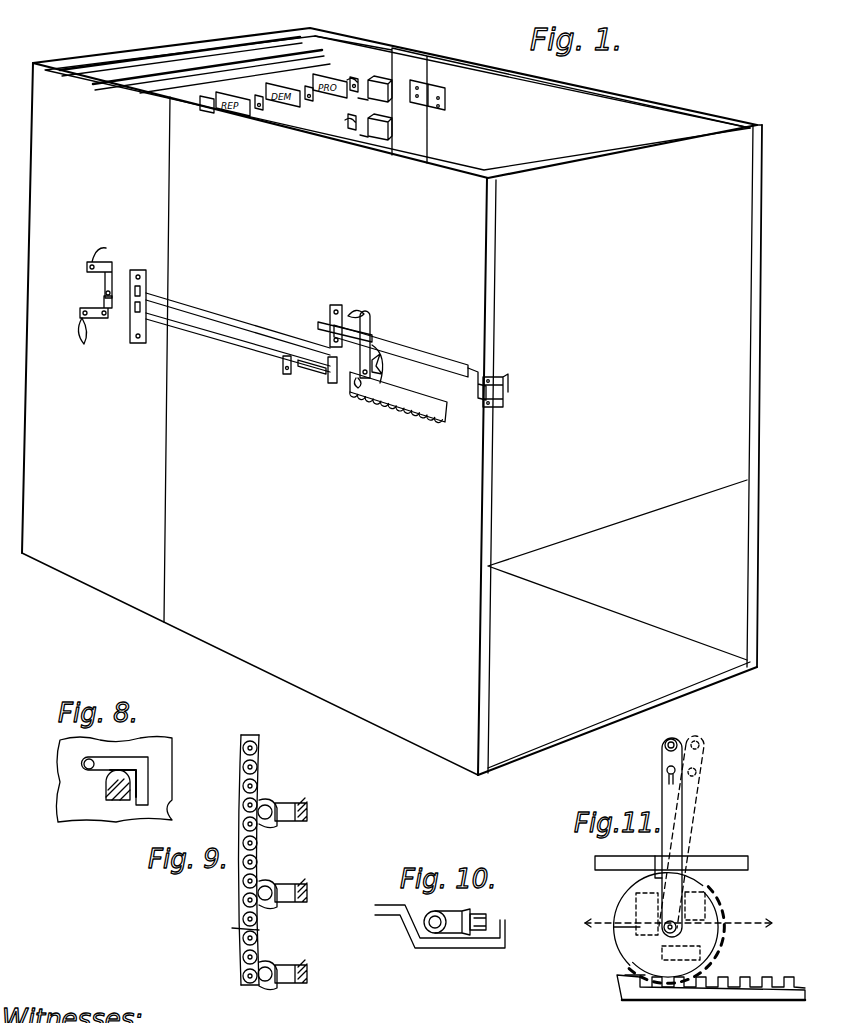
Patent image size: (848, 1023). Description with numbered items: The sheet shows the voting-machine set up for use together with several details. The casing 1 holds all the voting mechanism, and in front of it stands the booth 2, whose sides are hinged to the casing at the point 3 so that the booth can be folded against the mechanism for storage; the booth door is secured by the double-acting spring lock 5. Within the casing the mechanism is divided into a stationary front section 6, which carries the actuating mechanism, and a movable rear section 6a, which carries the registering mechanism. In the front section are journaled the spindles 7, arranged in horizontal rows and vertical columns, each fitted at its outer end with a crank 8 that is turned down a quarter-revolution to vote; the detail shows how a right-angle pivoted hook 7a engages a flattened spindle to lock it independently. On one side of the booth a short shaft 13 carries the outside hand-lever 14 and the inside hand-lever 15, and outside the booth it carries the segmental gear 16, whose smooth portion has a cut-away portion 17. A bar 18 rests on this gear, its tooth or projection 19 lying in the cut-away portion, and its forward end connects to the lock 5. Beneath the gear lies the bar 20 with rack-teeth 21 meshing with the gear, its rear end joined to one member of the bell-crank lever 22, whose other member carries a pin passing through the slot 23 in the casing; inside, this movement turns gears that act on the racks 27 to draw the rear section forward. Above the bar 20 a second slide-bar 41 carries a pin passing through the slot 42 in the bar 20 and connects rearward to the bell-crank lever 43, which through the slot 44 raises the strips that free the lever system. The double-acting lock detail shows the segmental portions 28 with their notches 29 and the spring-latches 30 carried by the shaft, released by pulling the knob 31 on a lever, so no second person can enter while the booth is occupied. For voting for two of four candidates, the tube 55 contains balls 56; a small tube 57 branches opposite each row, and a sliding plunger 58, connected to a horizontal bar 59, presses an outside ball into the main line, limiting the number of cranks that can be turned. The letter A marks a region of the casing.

In FIG. 1, the casing 1 is at (415, 58).
In FIG. 1, the booth 2 is at (616, 122).
In FIG. 1, the hinge point 3 is at (447, 98).
In FIG. 1, the lock 5 is at (505, 396).
In FIG. 1, the front section 6 is at (238, 68).
In FIG. 1, the rear section 6a is at (170, 56).
In FIG. 9, the rear section 6a is at (236, 929).
In FIG. 8, the spindle 7 is at (106, 790).
In FIG. 8, the right-angle pivoted hook 7a is at (140, 762).
In FIG. 1, the crank 8 is at (355, 75).
In FIG. 1, the short shaft 13 is at (360, 382).
In FIG. 1, the hand-lever 14 is at (370, 322).
In FIG. 11, the hand-lever 14 is at (664, 790).
In FIG. 11, the hand-lever 15 is at (702, 792).
In FIG. 1, the segmental gear 16 is at (385, 365).
In FIG. 11, the cut-away portion 17 is at (626, 908).
In FIG. 1, the bar 18 is at (424, 360).
In FIG. 11, the bar 18 is at (730, 860).
In FIG. 11, the tooth or projection 19 is at (650, 870).
In FIG. 1, the bar 20 is at (246, 360).
In FIG. 11, the bar 20 is at (626, 990).
In FIG. 1, the rack-teeth 21 is at (445, 402).
In FIG. 11, the rack-teeth 21 is at (756, 978).
In FIG. 1, the bell-crank lever 22 is at (104, 320).
In FIG. 1, the slot 23 is at (82, 330).
In FIG. 11, the racks 27 is at (640, 898).
In FIG. 11, the segmental portions 28 is at (716, 930).
In FIG. 11, the notch 29 is at (706, 896).
In FIG. 11, the spring-latch 30 is at (669, 928).
In FIG. 1, the knob 31 is at (358, 312).
In FIG. 11, the knob 31 is at (668, 768).
In FIG. 1, the second slide-bar 41 is at (240, 326).
In FIG. 1, the slot 42 is at (310, 376).
In FIG. 1, the bell-crank lever 43 is at (133, 272).
In FIG. 1, the slot 44 is at (98, 250).
In FIG. 9, the tube 55 is at (262, 860).
In FIG. 9, the balls 56 is at (258, 770).
In FIG. 9, the small tube 57 is at (278, 806).
In FIG. 10, the small tube 57 is at (466, 918).
In FIG. 9, the plunger 58 is at (298, 822).
In FIG. 10, the plunger 58 is at (490, 918).
In FIG. 10, the horizontal bar 59 is at (398, 918).
In FIG. 1, the compartment A is at (619, 332).